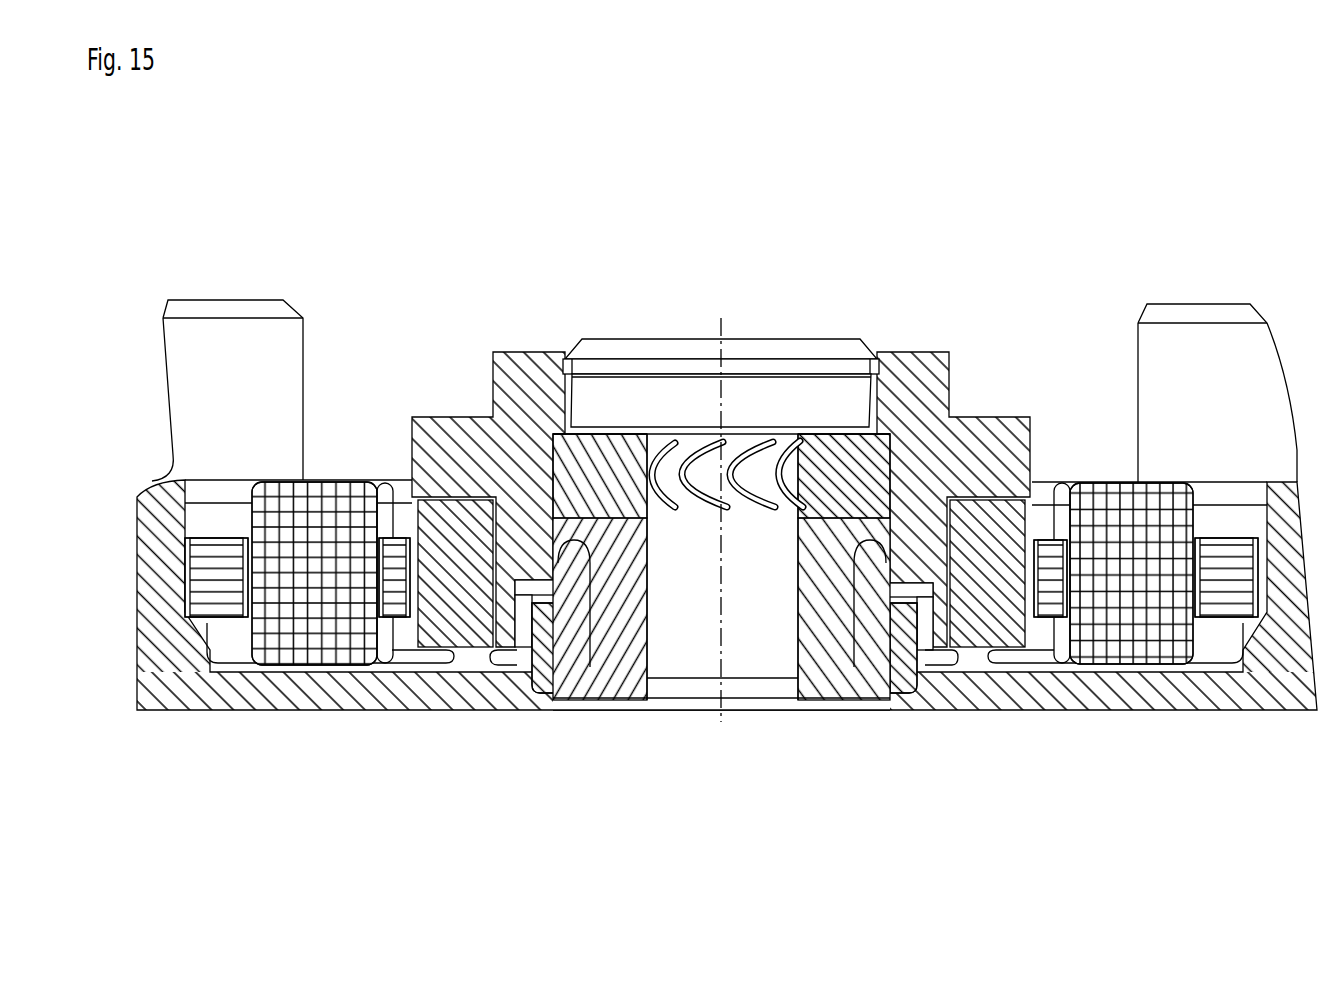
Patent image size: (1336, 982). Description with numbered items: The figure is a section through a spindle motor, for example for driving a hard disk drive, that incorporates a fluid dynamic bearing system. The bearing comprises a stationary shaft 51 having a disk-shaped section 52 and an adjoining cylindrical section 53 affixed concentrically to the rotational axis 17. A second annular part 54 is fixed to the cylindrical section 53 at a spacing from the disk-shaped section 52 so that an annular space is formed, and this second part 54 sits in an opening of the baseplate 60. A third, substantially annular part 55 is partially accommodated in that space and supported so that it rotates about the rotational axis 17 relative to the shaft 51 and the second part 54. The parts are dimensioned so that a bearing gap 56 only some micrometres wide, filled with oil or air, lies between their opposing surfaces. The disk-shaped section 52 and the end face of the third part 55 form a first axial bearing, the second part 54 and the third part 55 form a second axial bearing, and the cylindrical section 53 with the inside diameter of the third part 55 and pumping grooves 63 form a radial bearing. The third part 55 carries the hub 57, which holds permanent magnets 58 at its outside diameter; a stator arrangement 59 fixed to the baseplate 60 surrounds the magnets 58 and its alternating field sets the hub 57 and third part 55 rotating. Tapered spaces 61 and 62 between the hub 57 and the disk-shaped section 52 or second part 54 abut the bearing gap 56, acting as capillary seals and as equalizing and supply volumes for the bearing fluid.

The rotational axis 17 is at (722, 328).
The stationary shaft 51 is at (731, 288).
The disk-shaped section 52 is at (822, 397).
The cylindrical section 53 is at (705, 618).
The second annular part 54 is at (610, 655).
The third annular part 55 is at (827, 500).
The bearing gap 56 is at (628, 434).
The hub 57 is at (450, 447).
The permanent magnets 58 is at (452, 603).
The stator arrangement 59 is at (337, 596).
The baseplate 60 is at (245, 697).
The space 61 is at (588, 640).
The space 62 is at (557, 567).
The pumping grooves 63 is at (757, 513).